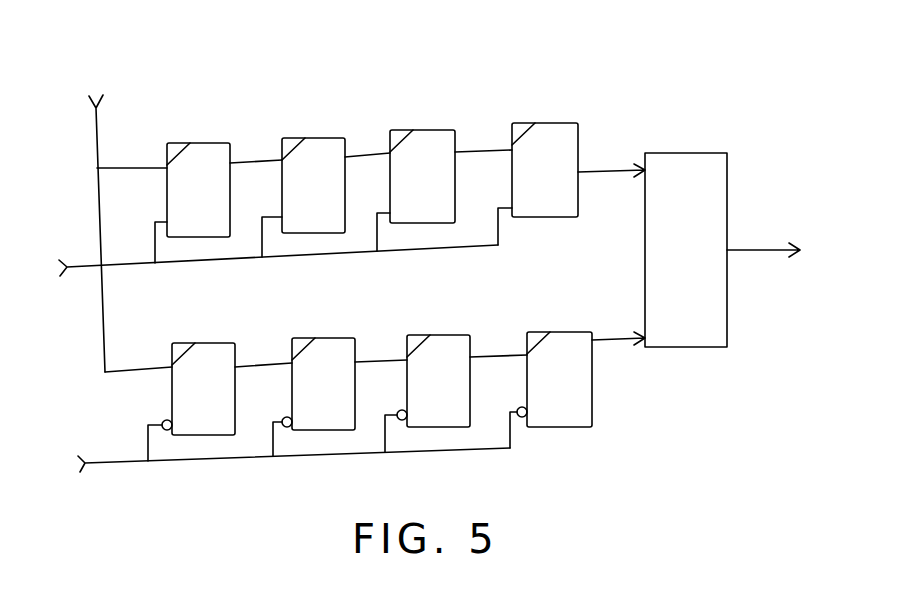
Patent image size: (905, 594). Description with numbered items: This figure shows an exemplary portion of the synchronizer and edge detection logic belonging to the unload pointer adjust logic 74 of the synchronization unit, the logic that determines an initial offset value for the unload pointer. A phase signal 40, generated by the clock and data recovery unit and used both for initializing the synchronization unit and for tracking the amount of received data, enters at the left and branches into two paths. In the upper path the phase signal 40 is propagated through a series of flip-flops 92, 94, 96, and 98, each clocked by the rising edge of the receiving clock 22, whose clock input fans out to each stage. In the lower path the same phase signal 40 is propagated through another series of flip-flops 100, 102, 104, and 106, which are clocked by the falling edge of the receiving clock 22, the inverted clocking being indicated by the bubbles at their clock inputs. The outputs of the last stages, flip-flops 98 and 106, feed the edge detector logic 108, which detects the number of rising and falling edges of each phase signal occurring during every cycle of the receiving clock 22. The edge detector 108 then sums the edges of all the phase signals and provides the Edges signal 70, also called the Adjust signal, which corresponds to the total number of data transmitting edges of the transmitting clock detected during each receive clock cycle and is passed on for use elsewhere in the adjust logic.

The adjust logic 74 is at (449, 66).
The phase[x:0] signal 40 is at (93, 122).
The receiving clock 22 is at (269, 340).
The flip-flop 92 is at (197, 143).
The flip-flop 94 is at (308, 138).
The flip-flop 96 is at (418, 130).
The flip-flop 98 is at (543, 123).
The flip-flop 100 is at (198, 343).
The flip-flop 102 is at (308, 338).
The flip-flop 104 is at (428, 335).
The flip-flop 106 is at (555, 332).
The edge detector logic 108 is at (665, 153).
The Edges signal 70 is at (756, 253).